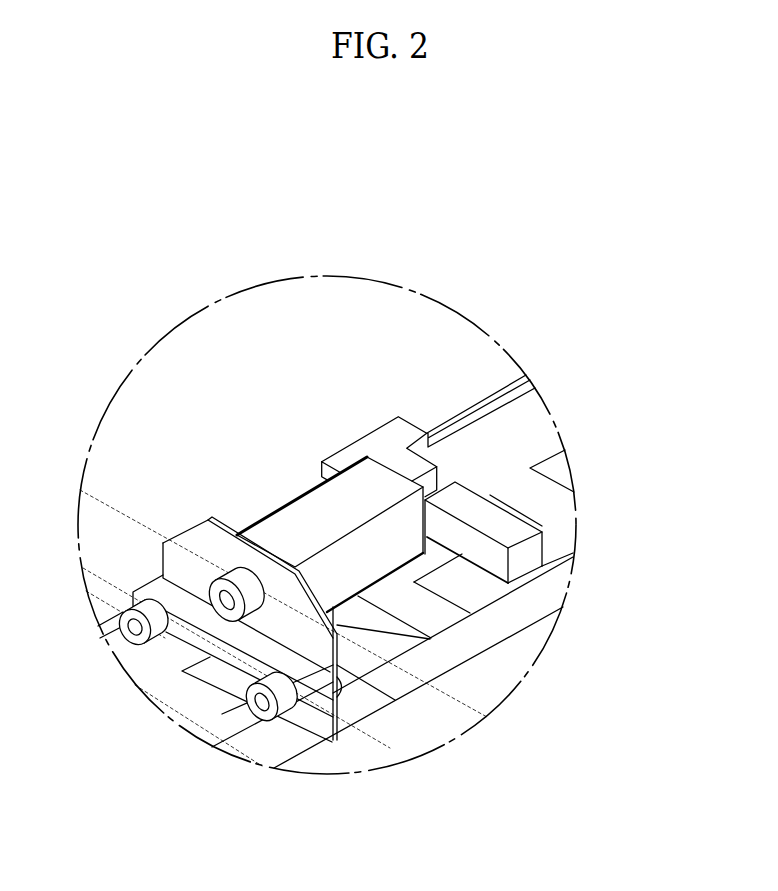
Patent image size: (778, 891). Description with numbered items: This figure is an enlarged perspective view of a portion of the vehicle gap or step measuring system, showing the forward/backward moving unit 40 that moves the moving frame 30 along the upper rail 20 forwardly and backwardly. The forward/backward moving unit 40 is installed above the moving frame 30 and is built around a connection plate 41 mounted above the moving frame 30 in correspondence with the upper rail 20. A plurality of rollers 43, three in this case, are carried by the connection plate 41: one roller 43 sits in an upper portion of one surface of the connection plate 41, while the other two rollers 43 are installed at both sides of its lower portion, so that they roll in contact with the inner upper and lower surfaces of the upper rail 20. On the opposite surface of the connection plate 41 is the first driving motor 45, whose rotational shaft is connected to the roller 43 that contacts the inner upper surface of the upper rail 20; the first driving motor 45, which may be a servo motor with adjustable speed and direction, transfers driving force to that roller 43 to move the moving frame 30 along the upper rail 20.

The upper rail 20 is at (124, 513).
The moving frame 30 is at (527, 437).
The forward/backward moving unit 40 is at (267, 584).
The connection plate 41 is at (213, 549).
The rollers 43 is at (228, 621).
The first driving motor 45 is at (325, 500).